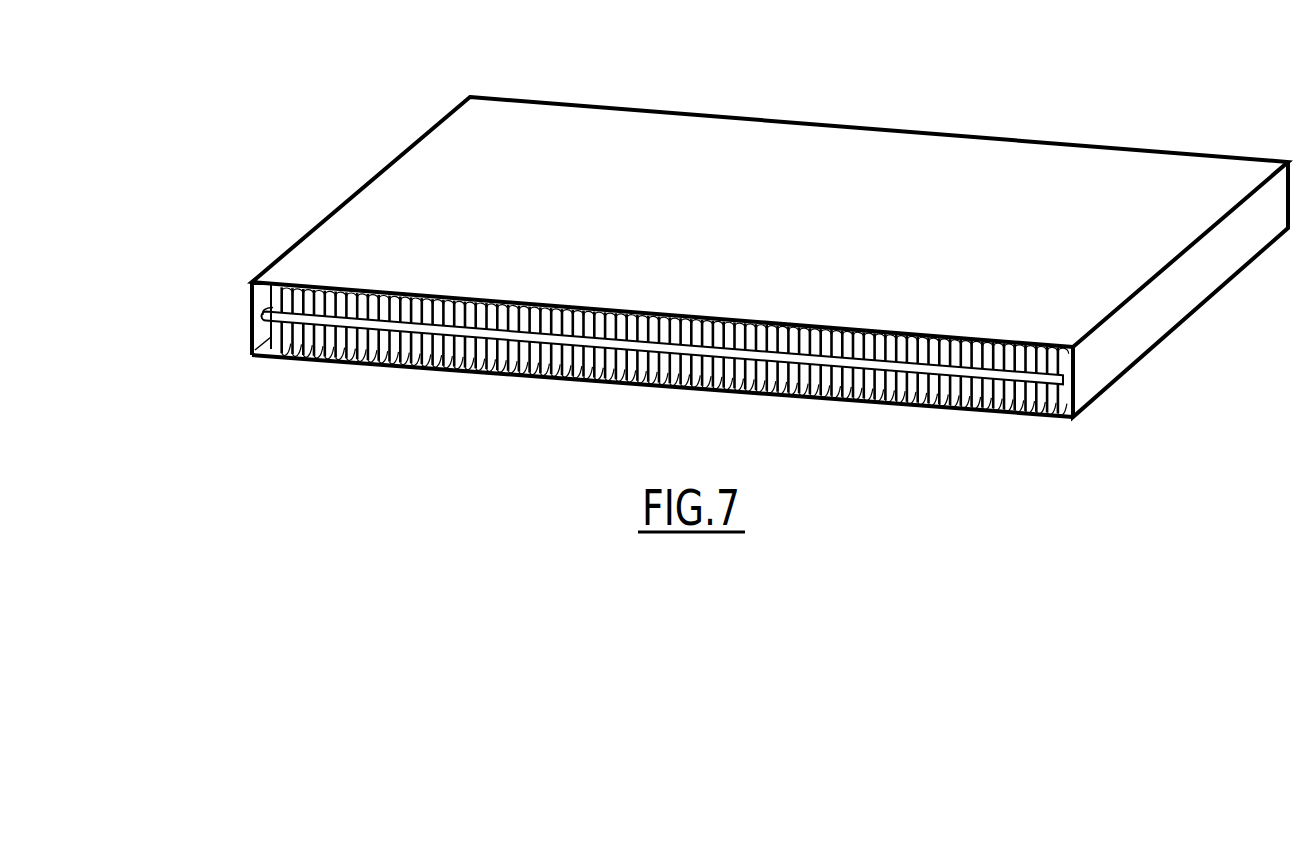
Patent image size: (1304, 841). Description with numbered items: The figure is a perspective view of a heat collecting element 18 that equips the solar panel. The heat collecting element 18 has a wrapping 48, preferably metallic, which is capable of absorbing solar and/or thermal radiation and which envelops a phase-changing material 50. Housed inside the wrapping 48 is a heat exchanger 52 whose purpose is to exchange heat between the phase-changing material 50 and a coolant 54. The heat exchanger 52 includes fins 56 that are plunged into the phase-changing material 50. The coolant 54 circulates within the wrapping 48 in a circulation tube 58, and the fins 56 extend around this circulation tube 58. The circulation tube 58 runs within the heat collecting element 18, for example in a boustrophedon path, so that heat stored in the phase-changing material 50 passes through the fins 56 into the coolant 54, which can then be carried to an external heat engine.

The heat collecting element 18 is at (1069, 114).
The wrapping 48 is at (808, 157).
The phase-changing material 50 is at (948, 337).
The heat exchanger 52 is at (240, 317).
The coolant 54 is at (319, 357).
The fins 56 is at (518, 375).
The circulation tube 58 is at (635, 373).